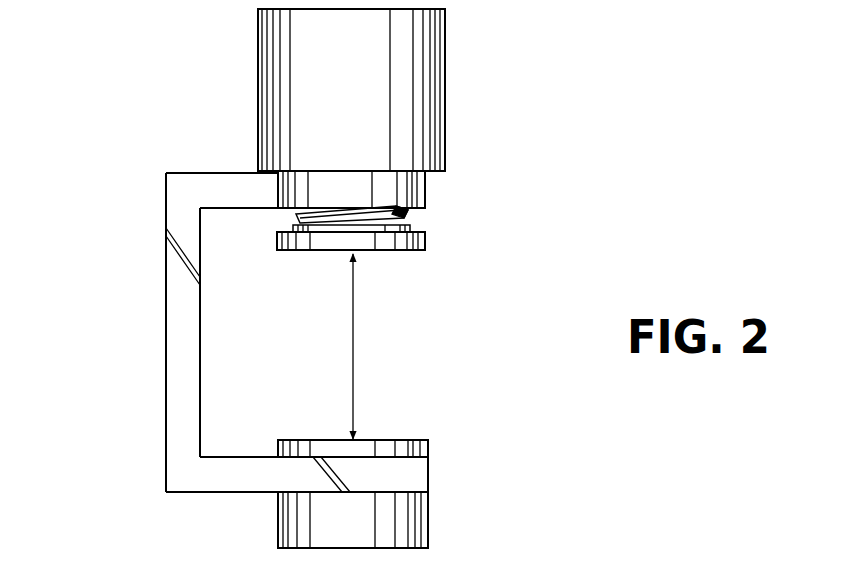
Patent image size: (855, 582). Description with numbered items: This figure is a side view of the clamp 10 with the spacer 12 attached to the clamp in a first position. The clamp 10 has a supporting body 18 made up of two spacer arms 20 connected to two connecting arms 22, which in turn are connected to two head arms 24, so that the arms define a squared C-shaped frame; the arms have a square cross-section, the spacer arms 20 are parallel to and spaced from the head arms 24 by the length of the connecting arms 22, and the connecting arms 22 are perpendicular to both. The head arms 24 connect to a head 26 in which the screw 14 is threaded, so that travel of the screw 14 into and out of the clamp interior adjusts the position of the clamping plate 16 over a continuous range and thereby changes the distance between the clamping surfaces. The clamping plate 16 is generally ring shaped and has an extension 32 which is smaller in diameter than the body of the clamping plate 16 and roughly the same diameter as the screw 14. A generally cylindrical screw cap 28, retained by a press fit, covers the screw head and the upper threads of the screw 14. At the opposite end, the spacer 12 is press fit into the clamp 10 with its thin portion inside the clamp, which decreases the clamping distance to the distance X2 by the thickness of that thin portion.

The clamp 10 is at (162, 72).
The spacer 12 is at (428, 520).
The screw 14 is at (402, 217).
The clamping plate 16 is at (430, 238).
The body 18 is at (157, 170).
The spacer arms 20 is at (218, 493).
The connecting arms 22 is at (166, 360).
The head arms 24 is at (210, 173).
The head 26 is at (426, 190).
The screw cap 28 is at (445, 75).
The extension 32 is at (293, 227).